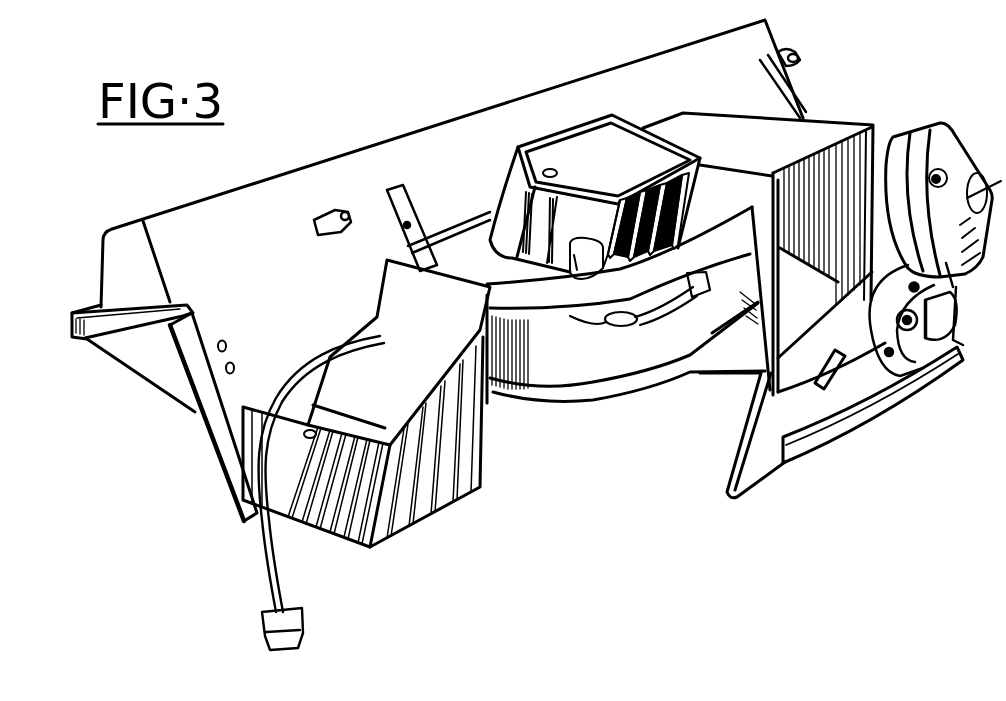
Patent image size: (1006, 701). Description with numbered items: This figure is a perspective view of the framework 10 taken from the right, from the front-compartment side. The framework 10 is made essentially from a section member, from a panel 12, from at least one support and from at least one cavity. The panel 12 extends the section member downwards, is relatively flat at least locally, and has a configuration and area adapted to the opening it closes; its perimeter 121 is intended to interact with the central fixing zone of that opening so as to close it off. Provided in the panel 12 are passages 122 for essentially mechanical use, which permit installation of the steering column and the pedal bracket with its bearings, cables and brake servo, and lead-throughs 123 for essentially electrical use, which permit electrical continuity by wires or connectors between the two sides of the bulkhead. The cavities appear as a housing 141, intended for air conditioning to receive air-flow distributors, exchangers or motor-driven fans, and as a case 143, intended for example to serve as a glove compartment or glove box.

The framework 10 is at (512, 465).
The panel 12 is at (773, 437).
The perimeter 121 is at (810, 447).
The passages 122 is at (904, 330).
The lead-throughs 123 is at (624, 326).
The housing 141 is at (805, 142).
The case 143 is at (420, 381).